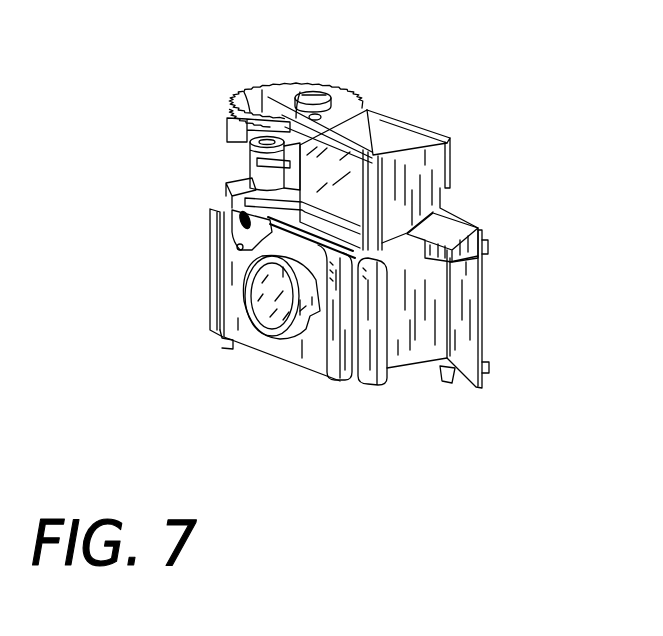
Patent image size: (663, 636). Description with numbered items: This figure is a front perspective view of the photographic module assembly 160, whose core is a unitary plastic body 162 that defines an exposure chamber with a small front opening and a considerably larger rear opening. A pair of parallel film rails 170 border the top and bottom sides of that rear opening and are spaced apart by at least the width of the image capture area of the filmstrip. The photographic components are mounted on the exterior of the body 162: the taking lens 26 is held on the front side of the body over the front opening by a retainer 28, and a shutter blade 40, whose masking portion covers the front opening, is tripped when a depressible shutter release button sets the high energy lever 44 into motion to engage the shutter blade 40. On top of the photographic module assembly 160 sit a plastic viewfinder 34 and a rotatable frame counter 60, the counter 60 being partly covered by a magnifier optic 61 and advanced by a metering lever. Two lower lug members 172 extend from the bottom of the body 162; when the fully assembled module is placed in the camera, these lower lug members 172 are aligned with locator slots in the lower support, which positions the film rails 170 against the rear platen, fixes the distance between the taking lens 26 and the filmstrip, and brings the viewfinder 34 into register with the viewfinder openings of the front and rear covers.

The taking lens 26 is at (265, 286).
The retainer 28 is at (275, 341).
The plastic viewfinder 34 is at (348, 160).
The shutter blade 40 is at (238, 230).
The high energy lever 44 is at (243, 186).
The rotatable frame counter 60 is at (262, 86).
The magnifier optic 61 is at (327, 88).
The photographic module assembly 160 is at (220, 202).
The unitary plastic body 162 is at (430, 327).
The film rails 170 is at (488, 250).
The lower lug members 172 is at (448, 383).